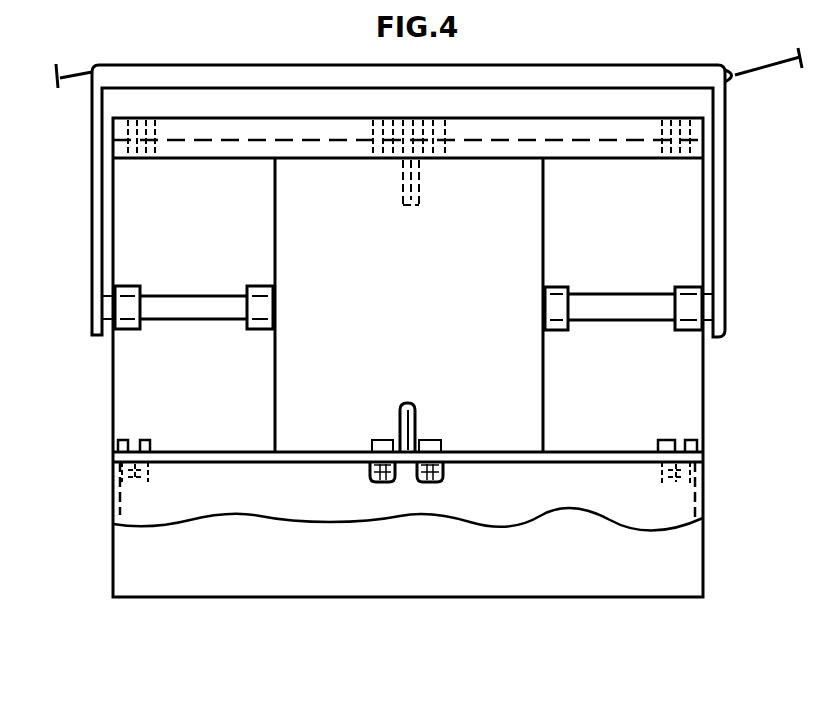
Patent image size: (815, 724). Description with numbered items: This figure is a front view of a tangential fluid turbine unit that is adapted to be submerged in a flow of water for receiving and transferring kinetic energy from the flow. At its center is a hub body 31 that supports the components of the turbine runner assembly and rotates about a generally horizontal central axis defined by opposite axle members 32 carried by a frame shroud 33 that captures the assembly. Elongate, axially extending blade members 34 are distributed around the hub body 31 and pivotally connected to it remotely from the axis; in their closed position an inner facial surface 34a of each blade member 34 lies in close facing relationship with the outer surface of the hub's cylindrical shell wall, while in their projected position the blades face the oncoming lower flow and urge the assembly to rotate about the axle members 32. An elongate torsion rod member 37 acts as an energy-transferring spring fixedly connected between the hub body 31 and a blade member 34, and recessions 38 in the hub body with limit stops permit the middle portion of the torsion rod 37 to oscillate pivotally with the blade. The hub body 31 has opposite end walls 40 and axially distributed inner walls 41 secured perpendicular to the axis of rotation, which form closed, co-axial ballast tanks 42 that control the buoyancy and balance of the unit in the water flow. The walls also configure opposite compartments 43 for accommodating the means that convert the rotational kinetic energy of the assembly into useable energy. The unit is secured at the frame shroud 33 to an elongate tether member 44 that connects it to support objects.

The hub body 31 is at (737, 422).
The axle members 32 is at (632, 306).
The frame shroud 33 is at (718, 193).
The blade members 34 is at (533, 562).
The inner facial surface 34a is at (407, 556).
The torsion rod member 37 is at (400, 440).
The recessions 38 is at (418, 428).
The end walls 40 is at (704, 390).
The inner walls 41 is at (277, 402).
The ballast tanks 42 is at (349, 271).
The compartments 43 is at (171, 233).
The tether member 44 is at (757, 78).